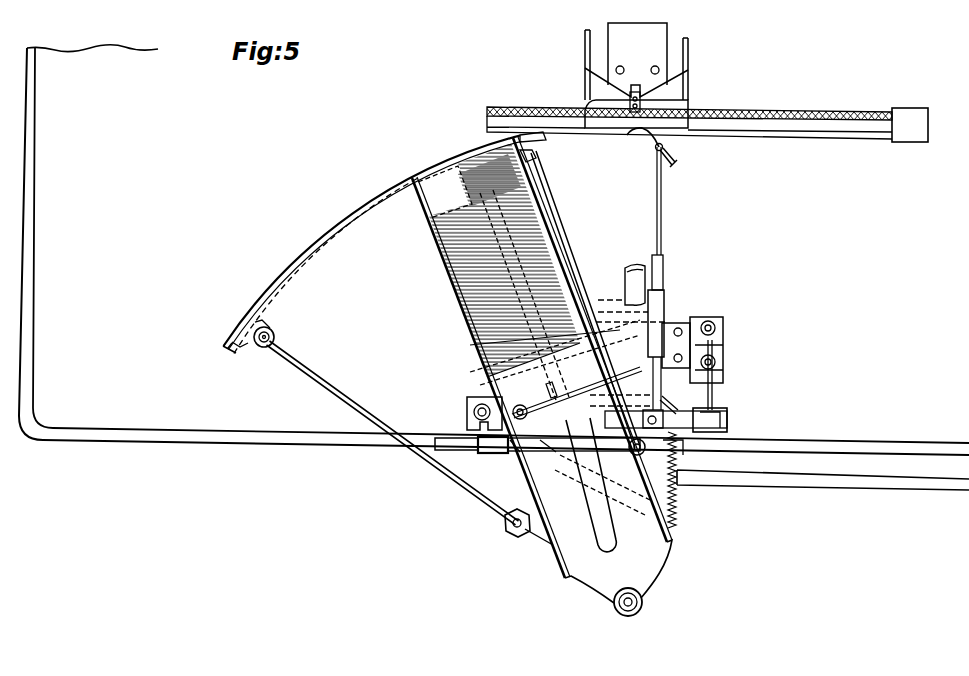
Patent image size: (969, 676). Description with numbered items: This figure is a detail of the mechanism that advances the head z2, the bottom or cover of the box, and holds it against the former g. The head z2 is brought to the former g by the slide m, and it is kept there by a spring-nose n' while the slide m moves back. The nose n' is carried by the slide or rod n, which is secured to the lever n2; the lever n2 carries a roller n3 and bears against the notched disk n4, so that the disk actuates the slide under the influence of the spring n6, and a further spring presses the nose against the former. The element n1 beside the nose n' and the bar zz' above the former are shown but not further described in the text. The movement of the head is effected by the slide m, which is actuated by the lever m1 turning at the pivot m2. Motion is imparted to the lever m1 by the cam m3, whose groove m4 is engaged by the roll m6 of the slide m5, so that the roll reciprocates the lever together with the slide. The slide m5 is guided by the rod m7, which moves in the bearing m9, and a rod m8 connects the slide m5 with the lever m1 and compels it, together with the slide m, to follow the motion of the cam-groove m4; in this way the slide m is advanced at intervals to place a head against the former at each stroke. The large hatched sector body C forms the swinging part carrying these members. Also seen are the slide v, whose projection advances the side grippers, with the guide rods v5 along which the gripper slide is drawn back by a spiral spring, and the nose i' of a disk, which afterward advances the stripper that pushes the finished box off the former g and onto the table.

The sector body C is at (452, 292).
The slide m is at (266, 329).
The lever m1 is at (384, 406).
The pivot of lever m2 is at (643, 604).
The cam m3 is at (728, 420).
The cam groove m4 is at (510, 447).
The slide m5 is at (683, 456).
The roll m6 is at (547, 445).
The guide rod m7 is at (453, 450).
The connecting rod m8 is at (600, 495).
The bearing m9 is at (470, 412).
The slide or rod n is at (665, 278).
The spring-nose n' is at (645, 149).
The arm n1 is at (671, 164).
The lever n2 is at (713, 401).
The roller n3 is at (724, 371).
The disk n4 is at (670, 412).
The spring n6 is at (675, 505).
The slide v is at (574, 240).
The guide rods v5 is at (639, 418).
The head z2 is at (548, 186).
The bar zz' is at (707, 116).
The former g is at (636, 114).
The nose i' is at (636, 67).